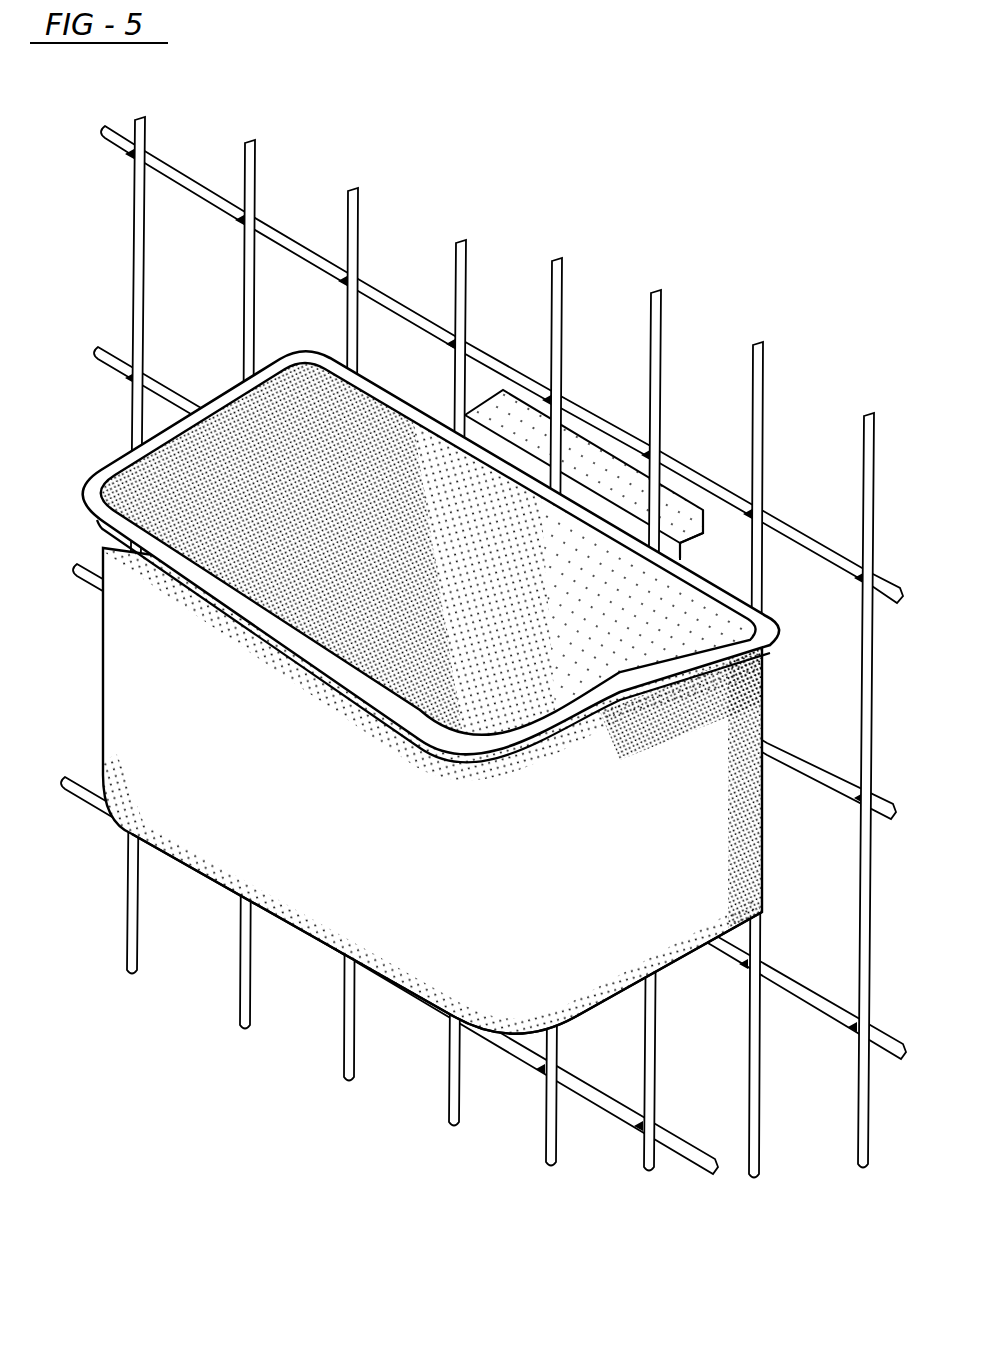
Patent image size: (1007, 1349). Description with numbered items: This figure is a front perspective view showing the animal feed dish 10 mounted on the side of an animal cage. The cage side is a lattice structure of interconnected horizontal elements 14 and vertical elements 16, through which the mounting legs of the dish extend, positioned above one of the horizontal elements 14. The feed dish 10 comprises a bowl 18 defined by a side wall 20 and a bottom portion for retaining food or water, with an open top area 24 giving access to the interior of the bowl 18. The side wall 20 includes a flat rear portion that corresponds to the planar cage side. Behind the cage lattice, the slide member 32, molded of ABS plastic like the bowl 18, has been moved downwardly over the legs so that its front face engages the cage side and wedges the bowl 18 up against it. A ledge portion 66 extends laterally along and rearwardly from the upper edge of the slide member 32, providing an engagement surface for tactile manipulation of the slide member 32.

The animal feed dish 10 is at (440, 678).
The horizontal elements 14 is at (843, 570).
The vertical elements 16 is at (755, 374).
The bowl 18 is at (407, 995).
The side wall 20 is at (436, 824).
The open top area 24 is at (263, 432).
The slide member 32 is at (690, 497).
The ledge portion 66 is at (593, 464).